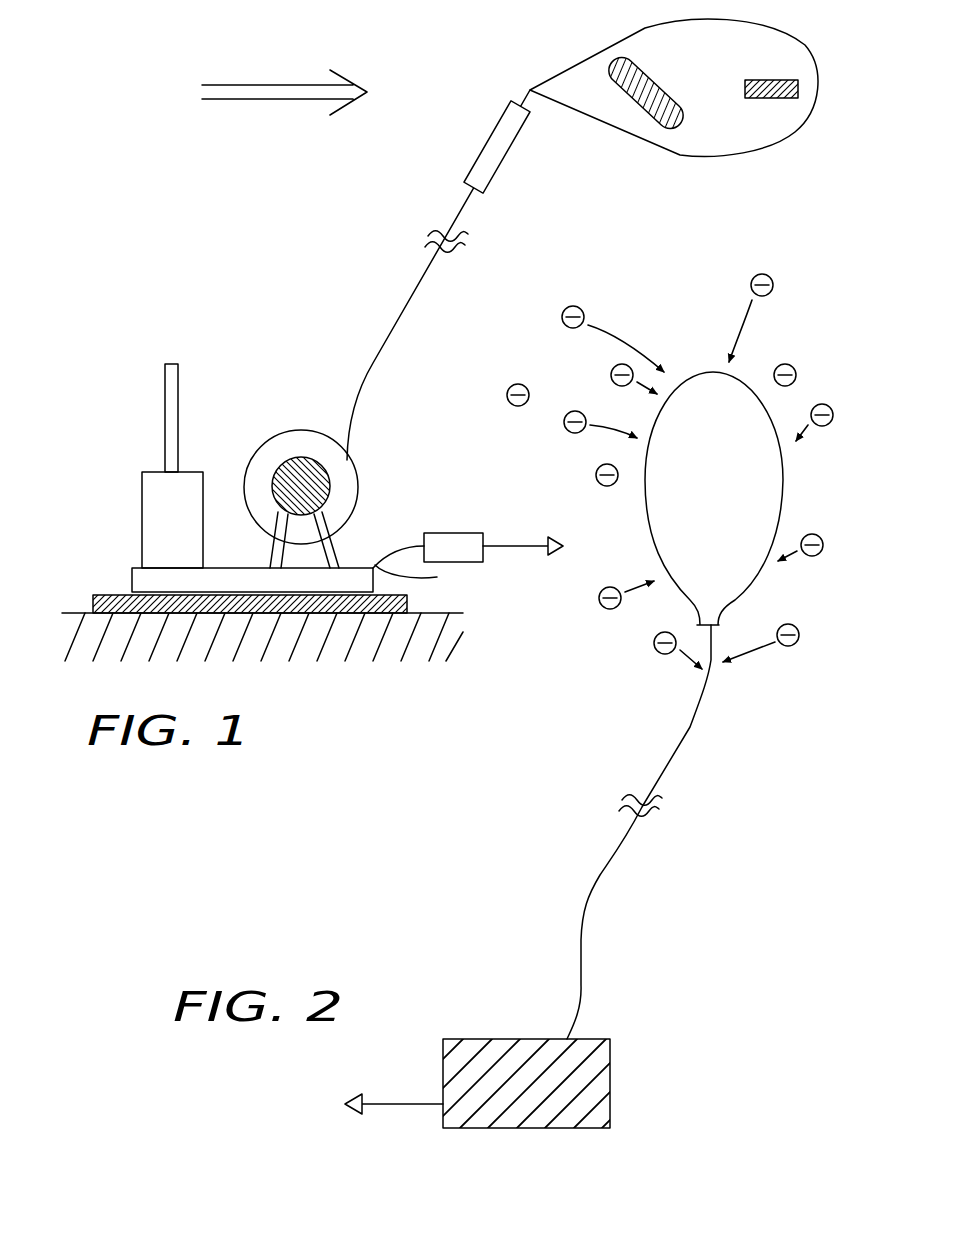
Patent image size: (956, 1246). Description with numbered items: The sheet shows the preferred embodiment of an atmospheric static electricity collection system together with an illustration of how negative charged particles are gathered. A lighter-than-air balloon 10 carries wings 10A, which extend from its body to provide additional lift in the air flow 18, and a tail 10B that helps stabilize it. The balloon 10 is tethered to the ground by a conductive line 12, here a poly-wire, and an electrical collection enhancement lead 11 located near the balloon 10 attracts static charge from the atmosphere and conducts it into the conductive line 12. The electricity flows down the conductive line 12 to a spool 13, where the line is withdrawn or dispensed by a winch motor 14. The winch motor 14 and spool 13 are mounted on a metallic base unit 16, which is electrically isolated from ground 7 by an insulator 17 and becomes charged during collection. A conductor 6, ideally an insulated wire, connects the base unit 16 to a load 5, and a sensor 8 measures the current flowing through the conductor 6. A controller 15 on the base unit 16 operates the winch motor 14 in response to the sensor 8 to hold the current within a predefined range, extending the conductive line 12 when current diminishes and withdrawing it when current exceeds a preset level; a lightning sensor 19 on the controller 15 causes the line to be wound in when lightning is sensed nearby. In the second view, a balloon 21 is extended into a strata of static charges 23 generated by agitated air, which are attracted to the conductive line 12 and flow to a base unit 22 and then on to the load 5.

In FIG. 1, the load 5 is at (534, 536).
In FIG. 2, the load 5 is at (376, 1116).
In FIG. 1, the conductor 6 is at (517, 547).
In FIG. 1, the ground 7 is at (197, 643).
In FIG. 1, the sensor 8 is at (448, 543).
In FIG. 1, the balloon 10 is at (674, 113).
In FIG. 1, the wings 10A is at (640, 73).
In FIG. 1, the tail 10B is at (780, 97).
In FIG. 1, the electrical collection enhancement lead 11 is at (492, 166).
In FIG. 1, the conductive line 12 is at (462, 210).
In FIG. 2, the conductive line 12 is at (670, 760).
In FIG. 1, the spool 13 is at (299, 430).
In FIG. 1, the winch motor 14 is at (331, 487).
In FIG. 1, the controller 15 is at (142, 486).
In FIG. 1, the base unit 16 is at (133, 570).
In FIG. 1, the insulator 17 is at (118, 600).
In FIG. 1, the air flow 18 is at (258, 76).
In FIG. 1, the lightning sensor 19 is at (165, 387).
In FIG. 2, the balloon 21 is at (713, 400).
In FIG. 2, the base unit 22 is at (597, 1088).
In FIG. 2, the static charges 23 is at (603, 300).